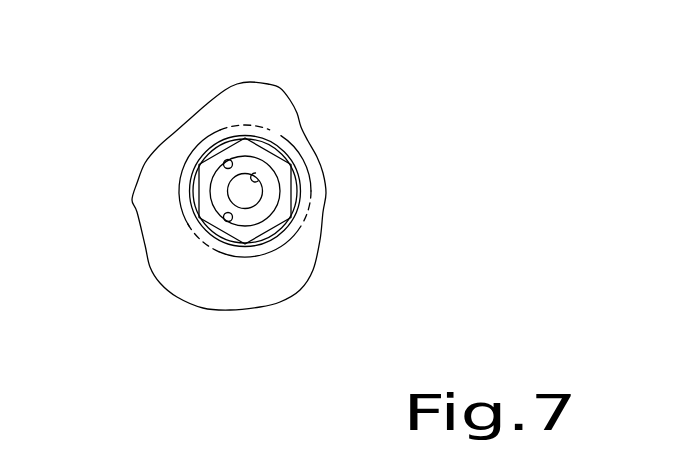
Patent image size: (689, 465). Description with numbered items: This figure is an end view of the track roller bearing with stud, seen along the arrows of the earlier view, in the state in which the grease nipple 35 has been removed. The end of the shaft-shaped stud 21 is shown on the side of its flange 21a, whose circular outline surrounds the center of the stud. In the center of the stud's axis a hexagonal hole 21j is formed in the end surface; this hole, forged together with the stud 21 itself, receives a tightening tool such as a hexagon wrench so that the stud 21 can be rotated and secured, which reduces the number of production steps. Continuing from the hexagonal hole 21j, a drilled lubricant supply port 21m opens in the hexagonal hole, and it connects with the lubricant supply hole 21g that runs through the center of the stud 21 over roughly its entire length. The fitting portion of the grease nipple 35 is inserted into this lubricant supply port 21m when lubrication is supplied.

The stud 21 is at (247, 190).
The flange 21a is at (167, 160).
The lubricant supply hole 21g is at (256, 173).
The lubricant supply port 21m is at (227, 160).
The hexagonal hole 21j is at (224, 220).
The grease nipple 35 is at (290, 223).